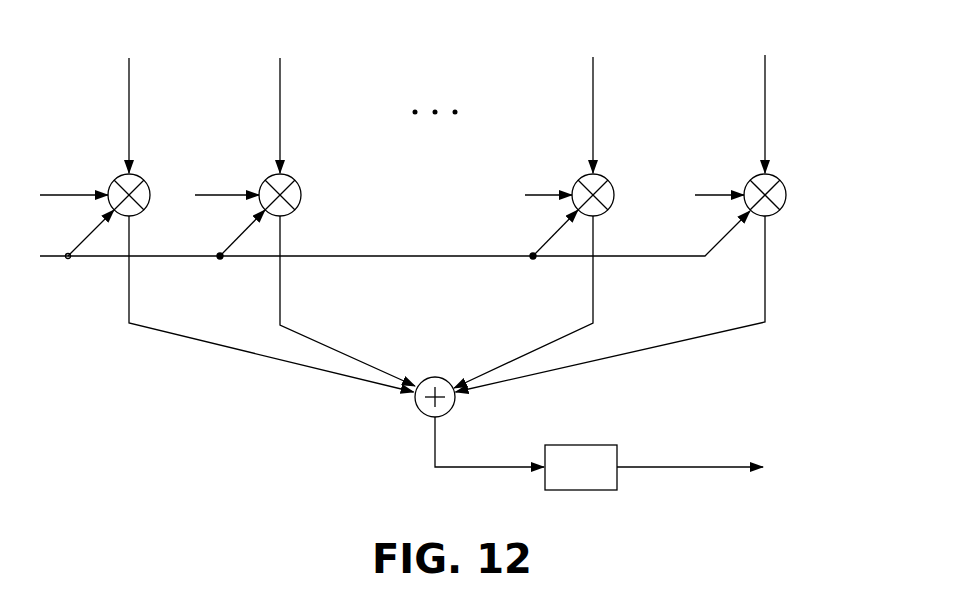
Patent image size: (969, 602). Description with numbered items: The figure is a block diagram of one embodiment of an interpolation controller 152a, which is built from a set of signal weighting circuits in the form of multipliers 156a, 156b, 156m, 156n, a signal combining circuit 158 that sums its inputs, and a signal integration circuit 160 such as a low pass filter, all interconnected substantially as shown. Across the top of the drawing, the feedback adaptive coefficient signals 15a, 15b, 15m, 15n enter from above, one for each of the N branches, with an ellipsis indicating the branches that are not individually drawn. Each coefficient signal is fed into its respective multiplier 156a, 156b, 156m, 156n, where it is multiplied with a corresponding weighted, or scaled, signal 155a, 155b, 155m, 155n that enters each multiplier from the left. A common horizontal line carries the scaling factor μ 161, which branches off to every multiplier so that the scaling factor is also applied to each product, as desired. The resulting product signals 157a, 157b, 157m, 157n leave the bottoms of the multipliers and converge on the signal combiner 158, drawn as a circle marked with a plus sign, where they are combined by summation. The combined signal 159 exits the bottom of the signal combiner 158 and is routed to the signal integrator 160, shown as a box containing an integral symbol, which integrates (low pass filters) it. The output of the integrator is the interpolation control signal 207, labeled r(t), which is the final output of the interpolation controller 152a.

The feedback adaptive coefficient signal 15a is at (129, 88).
The feedback adaptive coefficient signal 15b is at (280, 88).
The feedback adaptive coefficient signal 15m is at (593, 88).
The feedback adaptive coefficient signal 15n is at (765, 88).
The weighted signal 155a is at (70, 195).
The weighted signal 155b is at (226, 195).
The weighted signal 155m is at (538, 195).
The weighted signal 155n is at (708, 195).
The multiplier 156a is at (144, 180).
The multiplier 156b is at (295, 180).
The multiplier 156m is at (608, 180).
The multiplier 156n is at (786, 193).
The product signal 157a is at (129, 292).
The product signal 157b is at (280, 292).
The product signal 157m is at (593, 292).
The product signal 157n is at (765, 291).
The scaling factor μ 161 is at (103, 258).
The signal combining circuit 158 is at (437, 377).
The combined signal 159 is at (435, 436).
The signal integration circuit 160 is at (585, 445).
The interpolation control signal 207 is at (674, 467).
The interpolation controller 152a is at (160, 423).